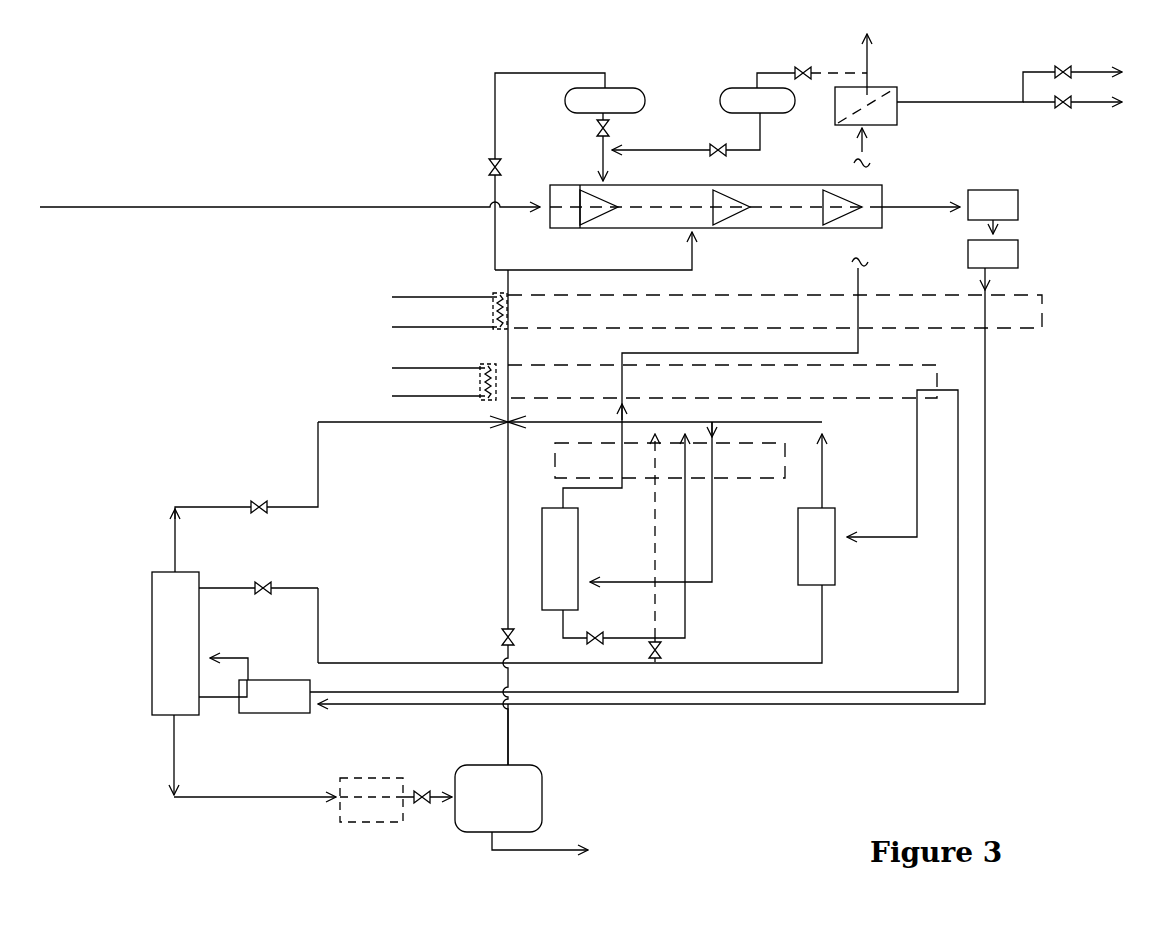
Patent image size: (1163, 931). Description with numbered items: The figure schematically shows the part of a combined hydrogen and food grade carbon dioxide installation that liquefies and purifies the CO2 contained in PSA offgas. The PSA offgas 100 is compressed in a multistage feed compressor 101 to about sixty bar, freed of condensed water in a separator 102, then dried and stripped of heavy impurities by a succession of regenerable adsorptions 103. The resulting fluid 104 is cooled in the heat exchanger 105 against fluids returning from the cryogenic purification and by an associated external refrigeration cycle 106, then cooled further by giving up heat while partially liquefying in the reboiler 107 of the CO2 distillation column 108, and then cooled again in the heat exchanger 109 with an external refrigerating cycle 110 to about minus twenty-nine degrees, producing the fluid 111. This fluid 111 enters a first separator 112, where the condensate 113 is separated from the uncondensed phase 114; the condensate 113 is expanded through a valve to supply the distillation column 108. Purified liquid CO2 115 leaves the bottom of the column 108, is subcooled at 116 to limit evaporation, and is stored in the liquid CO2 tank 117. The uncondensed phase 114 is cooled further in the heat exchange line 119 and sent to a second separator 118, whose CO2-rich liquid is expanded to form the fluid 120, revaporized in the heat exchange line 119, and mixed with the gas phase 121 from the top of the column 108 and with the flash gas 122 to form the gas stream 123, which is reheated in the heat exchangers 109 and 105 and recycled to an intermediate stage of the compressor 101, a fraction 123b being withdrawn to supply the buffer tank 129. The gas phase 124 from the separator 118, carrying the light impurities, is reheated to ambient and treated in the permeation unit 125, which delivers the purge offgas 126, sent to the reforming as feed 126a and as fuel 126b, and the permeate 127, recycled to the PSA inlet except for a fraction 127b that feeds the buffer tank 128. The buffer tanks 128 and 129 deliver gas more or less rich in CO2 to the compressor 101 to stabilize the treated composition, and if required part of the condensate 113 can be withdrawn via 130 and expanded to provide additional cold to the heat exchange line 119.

The PSA offgas 100 is at (290, 192).
The multistage feed compressor 101 is at (770, 228).
The separator 102 is at (1018, 208).
The regenerable adsorptions 103 is at (1018, 252).
The fluid 104 is at (677, 486).
The heat exchanger 105 is at (1042, 312).
The external refrigeration cycle 106 is at (465, 302).
The reboiler 107 is at (265, 714).
The CO2 distillation column 108 is at (152, 652).
The heat exchanger 109 is at (900, 368).
The external refrigerating cycle 110 is at (450, 370).
The fluid 111 is at (634, 541).
The first separator 112 is at (835, 578).
The condensate 113 is at (593, 624).
The uncondensed phase 114 is at (845, 471).
The purified liquid CO2 115 is at (255, 756).
The subcooling 116 is at (366, 778).
The liquid CO2 tank 117 is at (542, 776).
The second separator 118 is at (578, 546).
The heat exchange line 119 is at (745, 480).
The fluid 120 is at (632, 536).
The gas phase 121 is at (246, 497).
The evaporation gas 122 is at (532, 734).
The gas stream 123 is at (593, 498).
The fraction 123b is at (547, 159).
The gas phase 124 is at (715, 384).
The permeation unit 125 is at (893, 86).
The purge offgas 126 is at (976, 87).
The feed fraction 126a is at (1094, 61).
The fuel fraction 126b is at (1078, 112).
The permeate 127 is at (892, 64).
The fraction 127b is at (841, 60).
The buffer tank 128 is at (728, 88).
The buffer tank 129 is at (565, 95).
The withdrawal 130 is at (677, 651).